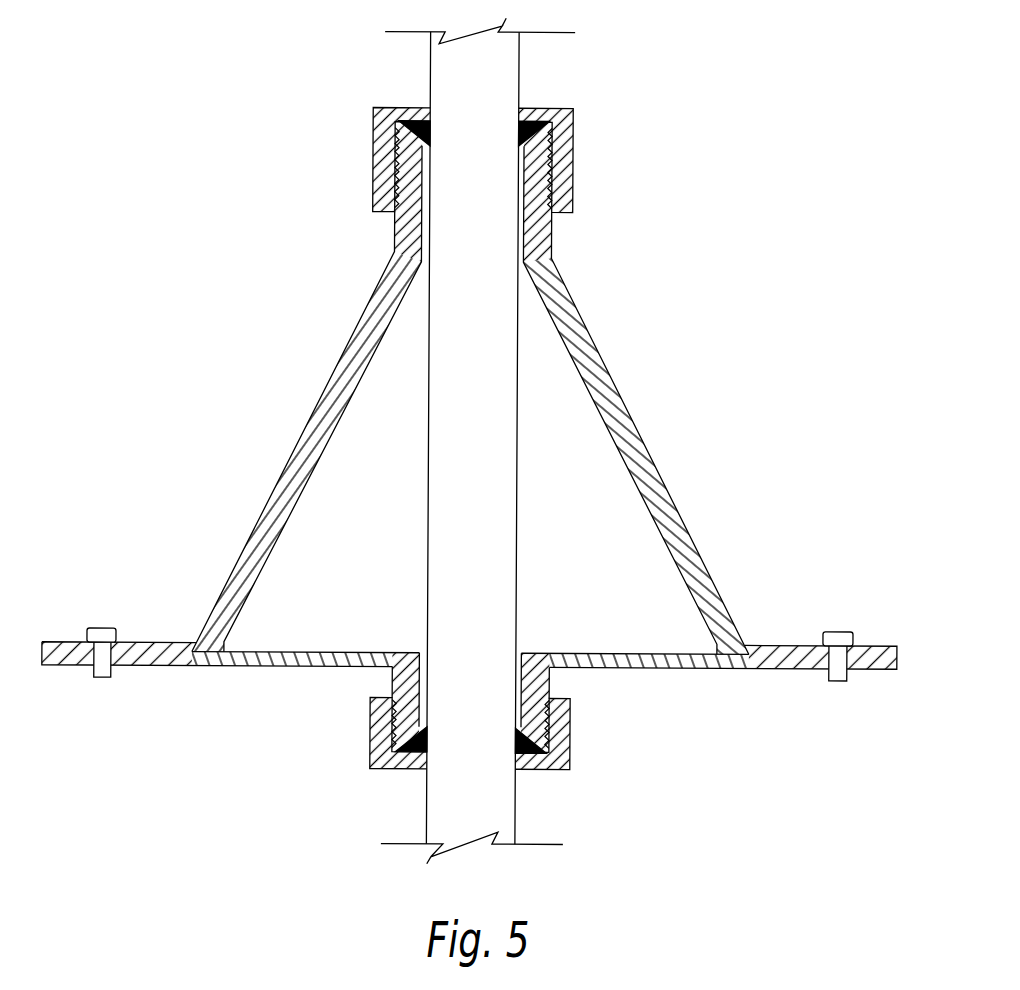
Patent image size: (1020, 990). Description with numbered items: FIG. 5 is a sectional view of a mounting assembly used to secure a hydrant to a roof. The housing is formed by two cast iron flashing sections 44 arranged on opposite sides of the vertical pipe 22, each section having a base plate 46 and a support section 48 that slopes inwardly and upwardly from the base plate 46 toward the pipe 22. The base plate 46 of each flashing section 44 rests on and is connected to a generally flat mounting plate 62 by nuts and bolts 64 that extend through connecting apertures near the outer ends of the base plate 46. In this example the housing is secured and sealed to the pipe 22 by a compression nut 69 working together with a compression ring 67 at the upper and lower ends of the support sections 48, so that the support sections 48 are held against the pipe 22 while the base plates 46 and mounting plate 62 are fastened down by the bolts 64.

The tube 22 is at (461, 469).
The flashing section 44 is at (471, 437).
The base plate 46 is at (177, 642).
The support section 48 is at (297, 447).
The mounting plate 62 is at (620, 653).
The connecting bolt 64 is at (90, 678).
The compression ring 67 is at (414, 120).
The compression nut 69 is at (556, 108).